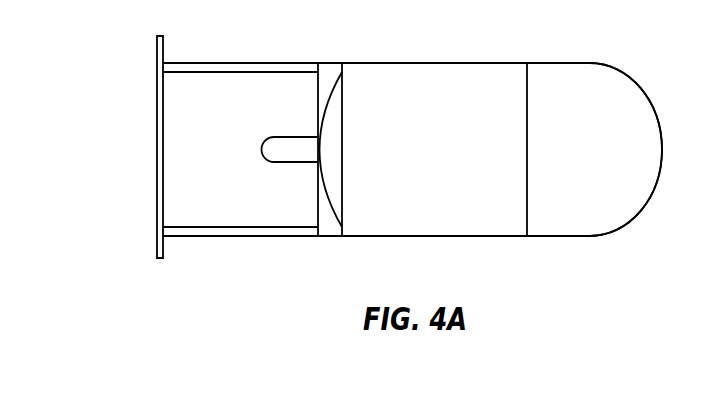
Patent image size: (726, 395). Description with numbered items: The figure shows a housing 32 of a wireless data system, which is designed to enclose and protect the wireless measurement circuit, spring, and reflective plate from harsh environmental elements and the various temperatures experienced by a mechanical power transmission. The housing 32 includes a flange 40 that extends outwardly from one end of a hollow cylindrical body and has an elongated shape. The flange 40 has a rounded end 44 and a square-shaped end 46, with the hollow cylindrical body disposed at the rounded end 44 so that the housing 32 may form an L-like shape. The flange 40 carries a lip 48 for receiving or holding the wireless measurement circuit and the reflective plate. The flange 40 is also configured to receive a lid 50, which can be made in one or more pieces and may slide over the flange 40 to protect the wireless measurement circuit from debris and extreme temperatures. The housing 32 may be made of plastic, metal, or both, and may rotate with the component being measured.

The housing 32 is at (80, 93).
The flange 40 is at (343, 249).
The rounded end 44 is at (648, 128).
The square-shaped end 46 is at (160, 163).
The lip 48 is at (276, 232).
The lid 50 is at (550, 227).